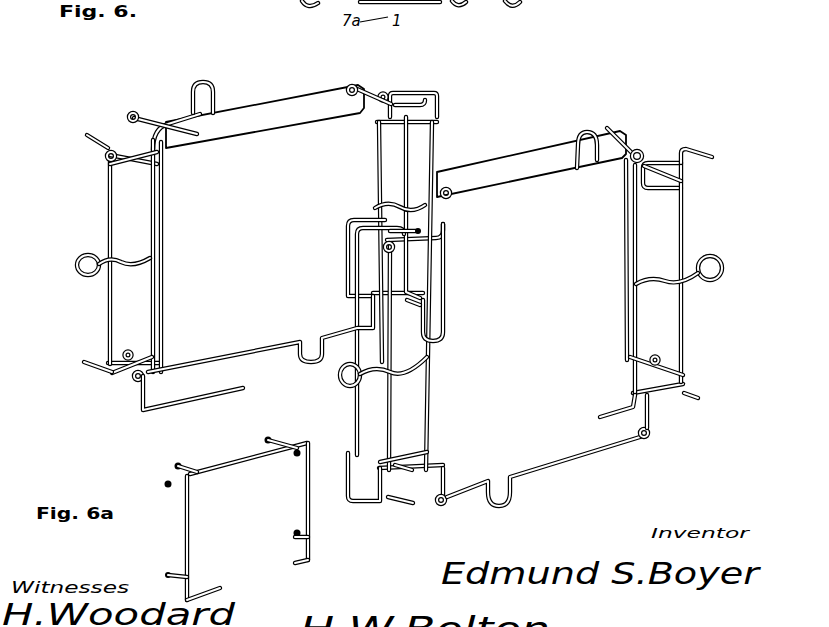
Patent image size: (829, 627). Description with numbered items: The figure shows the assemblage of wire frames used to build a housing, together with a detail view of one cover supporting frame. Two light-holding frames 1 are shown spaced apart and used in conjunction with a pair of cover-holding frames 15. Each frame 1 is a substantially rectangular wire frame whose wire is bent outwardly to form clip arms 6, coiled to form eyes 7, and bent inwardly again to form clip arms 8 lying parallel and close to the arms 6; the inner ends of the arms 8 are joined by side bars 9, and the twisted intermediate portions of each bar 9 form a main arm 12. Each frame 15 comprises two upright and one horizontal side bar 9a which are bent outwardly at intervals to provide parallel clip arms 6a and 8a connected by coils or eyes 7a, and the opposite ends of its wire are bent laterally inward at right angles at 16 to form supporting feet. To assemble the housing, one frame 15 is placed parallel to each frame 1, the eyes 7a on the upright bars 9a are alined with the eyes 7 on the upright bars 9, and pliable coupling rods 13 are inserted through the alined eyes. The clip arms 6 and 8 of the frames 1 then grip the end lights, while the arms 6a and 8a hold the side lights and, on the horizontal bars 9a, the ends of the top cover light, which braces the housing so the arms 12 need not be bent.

In FIG. 6, the light-holding frame 1 is at (255, 100).
In FIG. 6, the clip arm 6 is at (420, 478).
In FIG. 6, the clip arm 6a is at (116, 150).
In FIG. 6A, the clip arm 6a is at (185, 463).
In FIG. 6, the eye 7 is at (110, 168).
In FIG. 6, the eye 7a is at (105, 156).
In FIG. 6A, the eye 7a is at (166, 575).
In FIG. 6, the clip arm 8 is at (120, 178).
In FIG. 6, the clip arm 8a is at (115, 152).
In FIG. 6A, the clip arm 8a is at (176, 467).
In FIG. 6, the side bar 9 is at (156, 228).
In FIG. 6, the side bar 9a is at (238, 152).
In FIG. 6A, the side bar 9a is at (185, 542).
In FIG. 6, the main arm 12 is at (78, 255).
In FIG. 6, the coupling rod 13 is at (108, 222).
In FIG. 6, the cover-holding frame 15 is at (222, 150).
In FIG. 6A, the cover-holding frame 15 is at (233, 460).
In FIG. 6, the supporting foot 16 is at (189, 401).
In FIG. 6A, the supporting foot 16 is at (207, 597).